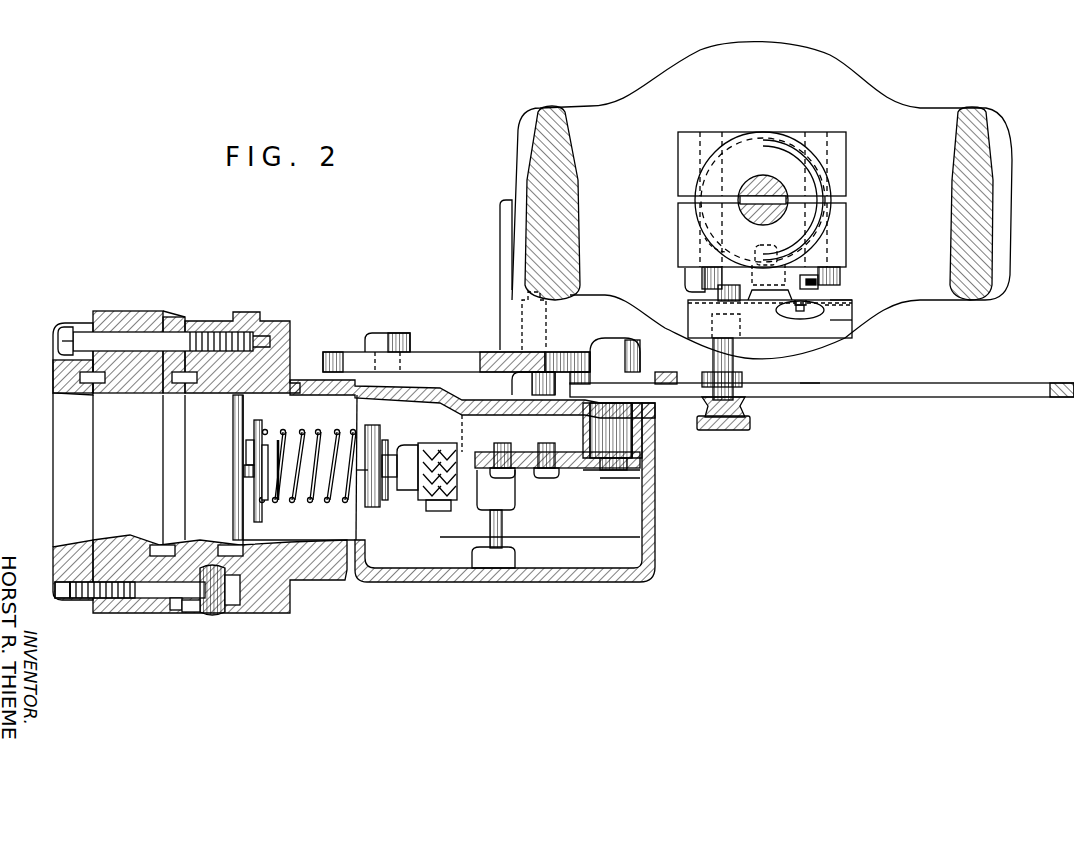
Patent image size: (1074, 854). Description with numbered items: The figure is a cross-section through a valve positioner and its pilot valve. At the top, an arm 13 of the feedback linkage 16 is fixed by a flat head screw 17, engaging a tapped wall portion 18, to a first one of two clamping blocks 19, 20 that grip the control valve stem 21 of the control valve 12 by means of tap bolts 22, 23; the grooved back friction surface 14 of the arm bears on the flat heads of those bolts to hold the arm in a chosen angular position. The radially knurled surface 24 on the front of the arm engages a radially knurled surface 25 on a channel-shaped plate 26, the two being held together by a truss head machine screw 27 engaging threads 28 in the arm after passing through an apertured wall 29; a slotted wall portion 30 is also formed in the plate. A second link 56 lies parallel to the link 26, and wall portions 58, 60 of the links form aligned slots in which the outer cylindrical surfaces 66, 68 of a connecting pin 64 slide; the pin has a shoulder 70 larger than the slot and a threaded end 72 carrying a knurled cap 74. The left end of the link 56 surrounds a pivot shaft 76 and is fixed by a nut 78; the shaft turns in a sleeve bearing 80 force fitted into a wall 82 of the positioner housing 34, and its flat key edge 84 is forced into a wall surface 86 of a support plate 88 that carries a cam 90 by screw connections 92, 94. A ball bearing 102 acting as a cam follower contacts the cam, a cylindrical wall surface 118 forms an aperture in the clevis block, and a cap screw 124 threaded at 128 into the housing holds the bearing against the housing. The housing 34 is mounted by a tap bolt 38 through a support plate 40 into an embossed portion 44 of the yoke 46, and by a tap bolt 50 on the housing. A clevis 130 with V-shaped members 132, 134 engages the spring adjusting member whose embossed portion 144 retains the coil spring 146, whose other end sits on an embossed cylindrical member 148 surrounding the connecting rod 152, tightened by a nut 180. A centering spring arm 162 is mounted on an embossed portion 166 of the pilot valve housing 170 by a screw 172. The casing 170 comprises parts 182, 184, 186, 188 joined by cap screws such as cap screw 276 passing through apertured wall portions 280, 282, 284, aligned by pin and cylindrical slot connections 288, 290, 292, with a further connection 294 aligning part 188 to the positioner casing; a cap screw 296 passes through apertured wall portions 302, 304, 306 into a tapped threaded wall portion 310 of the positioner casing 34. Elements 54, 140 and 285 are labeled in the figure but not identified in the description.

The control valve 12 is at (652, 62).
The arm 13 is at (712, 290).
The back friction surface 14 is at (718, 268).
The feedback linkage 16 is at (900, 314).
The flat head screw 17 is at (805, 374).
The tapped wall portion 18 is at (706, 236).
The clamping block 19 is at (846, 220).
The clamping block 20 is at (840, 165).
The control valve stem 21 is at (758, 185).
The tap bolt 22 is at (690, 276).
The tap bolt 23 is at (842, 283).
The radially knurled surface 24 is at (768, 296).
The radially knurled surface 25 is at (793, 312).
The plate 26 is at (848, 298).
The truss head machine screw 27 is at (807, 313).
The threads 28 is at (838, 272).
The bored out apertured wall 29 is at (852, 303).
The slotted out wall portion 30 is at (820, 315).
The positioner housing 34 is at (665, 522).
The tap bolt 38 is at (525, 382).
The support plate 40 is at (474, 362).
The embossed portion 44 is at (516, 308).
The yoke 46 is at (548, 160).
The tap bolt 50 is at (378, 338).
The end piece 54 is at (340, 362).
The link 56 is at (952, 399).
The wall portion 58 is at (840, 322).
The wall portion 60 is at (868, 399).
The connecting pin 64 is at (735, 349).
The outer cylindrical surface 66 is at (712, 318).
The outer cylindrical surface 68 is at (735, 392).
The shoulder 70 is at (704, 378).
The threaded end 72 is at (747, 407).
The knurled cap 74 is at (725, 431).
The pivot shaft 76 is at (615, 410).
The nut 78 is at (632, 372).
The sleeve bearing 80 is at (640, 440).
The wall 82 is at (642, 430).
The flat key edge 84 is at (615, 471).
The wall surface 86 is at (636, 465).
The support plate 88 is at (594, 471).
The cam 90 is at (578, 470).
The screw connection 92 is at (547, 480).
The screw connection 94 is at (505, 480).
The ball bearing 102 is at (458, 450).
The cylindrical wall surface 118 is at (428, 445).
The cap screw 124 is at (445, 511).
The threaded connection 128 is at (430, 495).
The clevis 130 is at (400, 478).
The V-shaped member 132 is at (412, 490).
The V-shaped member 134 is at (407, 448).
The pin 140 is at (358, 477).
The embossed portion 144 is at (362, 445).
The coil spring 146 is at (315, 440).
The embossed cylindrical member 148 is at (250, 495).
The connecting rod 152 is at (283, 480).
The centering spring arm 162 is at (245, 458).
The embossed portion 166 is at (244, 474).
The pilot valve housing 170 is at (131, 303).
The screw 172 is at (258, 430).
The nut 180 is at (265, 500).
The pilot valve casing part 182 is at (53, 425).
The pilot valve casing part 184 is at (135, 613).
The pilot valve casing part 186 is at (190, 613).
The pilot valve casing part 188 is at (212, 613).
The cap screw 276 is at (226, 582).
The apertured wall portion 280 is at (170, 540).
The apertured wall portion 282 is at (176, 613).
The apertured wall portion 284 is at (105, 600).
The end 285 is at (80, 600).
The pin and cylindrical slot connection 288 is at (172, 385).
The pin and cylindrical slot connection 290 is at (155, 545).
The pin and cylindrical slot connection 292 is at (100, 385).
The pin and cylindrical slot connection 294 is at (225, 545).
The cap screw 296 is at (58, 337).
The apertured wall portion 302 is at (80, 324).
The apertured wall portion 304 is at (138, 325).
The apertured wall portion 306 is at (178, 325).
The tapped threaded wall portion 310 is at (240, 335).